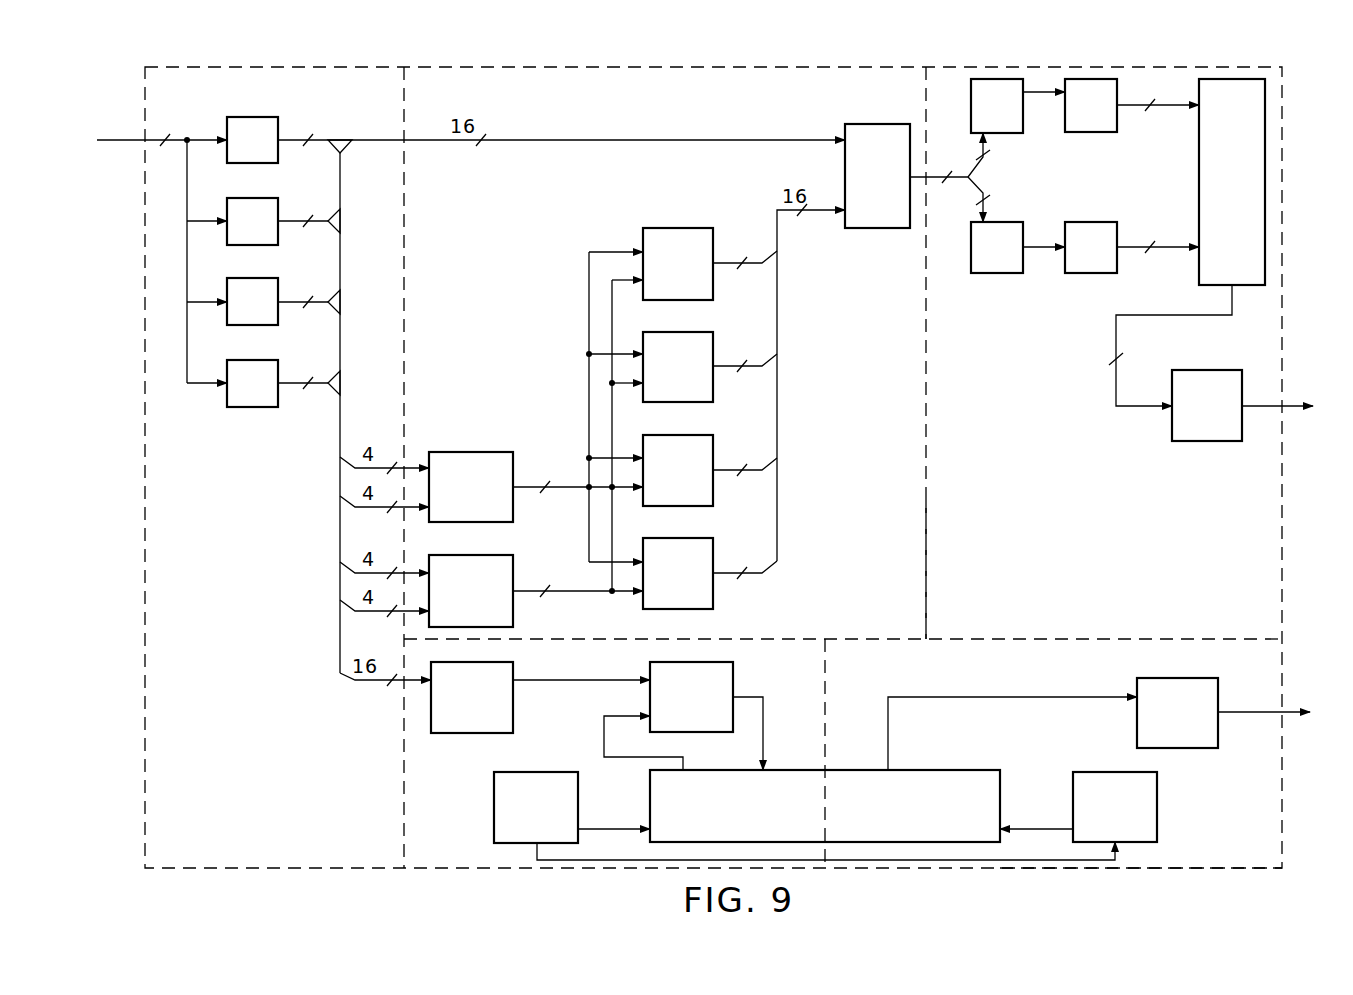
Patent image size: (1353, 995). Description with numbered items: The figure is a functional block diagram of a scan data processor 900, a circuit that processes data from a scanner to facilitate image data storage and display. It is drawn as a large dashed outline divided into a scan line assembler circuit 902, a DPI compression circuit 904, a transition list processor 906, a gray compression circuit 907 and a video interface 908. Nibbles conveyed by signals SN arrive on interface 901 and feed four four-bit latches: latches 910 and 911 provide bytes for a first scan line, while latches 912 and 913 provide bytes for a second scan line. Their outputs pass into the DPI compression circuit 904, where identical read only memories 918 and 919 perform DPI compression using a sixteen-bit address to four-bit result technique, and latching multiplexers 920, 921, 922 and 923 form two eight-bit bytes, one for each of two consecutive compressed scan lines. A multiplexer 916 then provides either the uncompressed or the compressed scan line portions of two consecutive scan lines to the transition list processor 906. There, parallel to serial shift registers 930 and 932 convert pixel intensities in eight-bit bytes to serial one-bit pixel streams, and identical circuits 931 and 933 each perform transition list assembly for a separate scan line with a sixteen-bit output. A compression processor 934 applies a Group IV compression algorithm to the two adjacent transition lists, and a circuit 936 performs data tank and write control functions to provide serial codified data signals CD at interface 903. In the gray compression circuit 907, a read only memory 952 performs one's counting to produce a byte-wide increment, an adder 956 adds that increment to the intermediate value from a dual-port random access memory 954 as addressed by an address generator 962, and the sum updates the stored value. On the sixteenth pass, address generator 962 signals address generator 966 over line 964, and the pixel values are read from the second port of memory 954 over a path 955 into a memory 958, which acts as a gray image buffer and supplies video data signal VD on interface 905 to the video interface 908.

The scan data processor 900 is at (145, 586).
The interface 901 is at (135, 147).
The scan line assembler circuit 902 is at (243, 97).
The interface 903 is at (1292, 410).
The DPI compression circuit 904 is at (670, 97).
The interface 905 is at (1290, 717).
The transition list processor 906 is at (1130, 610).
The gray compression circuit 907 is at (468, 860).
The video interface 908 is at (1238, 856).
The latch 910 is at (258, 163).
The latch 911 is at (258, 245).
The latch 912 is at (258, 325).
The latch 913 is at (258, 407).
The multiplexer 916 is at (885, 228).
The read only memory 918 is at (487, 452).
The read only memory 919 is at (487, 555).
The latching multiplexer 920 is at (692, 228).
The latching multiplexer 921 is at (692, 332).
The latching multiplexer 922 is at (692, 435).
The latching multiplexer 923 is at (692, 538).
The parallel to serial shift register 930 is at (1019, 133).
The transition list assembly circuit 931 is at (1089, 132).
The parallel to serial shift register 932 is at (1000, 273).
The transition list assembly circuit 933 is at (1094, 273).
The compression processor 934 is at (1199, 172).
The write control circuit 936 is at (1212, 441).
The read only memory 952 is at (508, 662).
The dual-port random access memory 954 is at (933, 770).
The data output line 955 is at (995, 697).
The adder 956 is at (733, 674).
The memory 958 is at (1180, 678).
The address generator 962 is at (494, 805).
The line 964 is at (655, 860).
The address generator 966 is at (1157, 806).